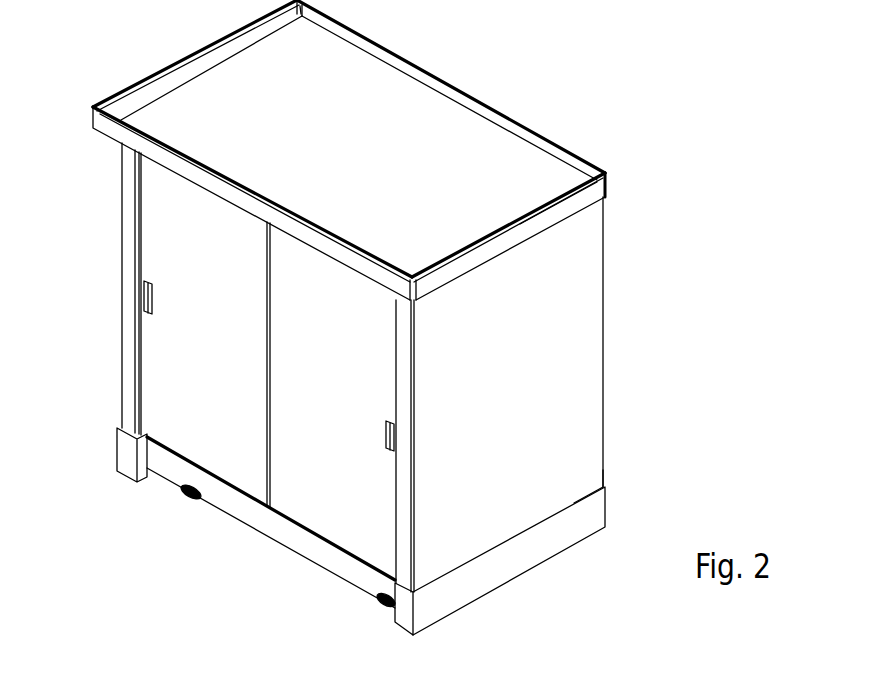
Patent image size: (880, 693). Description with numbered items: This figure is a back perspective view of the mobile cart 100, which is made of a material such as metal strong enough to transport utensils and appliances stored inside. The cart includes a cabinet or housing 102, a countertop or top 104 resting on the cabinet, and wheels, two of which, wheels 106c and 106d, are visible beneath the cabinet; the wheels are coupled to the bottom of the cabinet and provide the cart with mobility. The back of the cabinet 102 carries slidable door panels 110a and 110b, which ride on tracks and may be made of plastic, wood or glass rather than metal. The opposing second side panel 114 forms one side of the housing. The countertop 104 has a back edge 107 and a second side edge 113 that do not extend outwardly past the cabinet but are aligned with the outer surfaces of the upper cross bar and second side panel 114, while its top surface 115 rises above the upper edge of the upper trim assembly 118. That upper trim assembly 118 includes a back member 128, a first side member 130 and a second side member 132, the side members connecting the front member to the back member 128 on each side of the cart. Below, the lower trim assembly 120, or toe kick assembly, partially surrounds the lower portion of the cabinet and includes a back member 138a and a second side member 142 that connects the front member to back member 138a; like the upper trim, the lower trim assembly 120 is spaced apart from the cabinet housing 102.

The mobile cart 100 is at (362, 330).
The cabinet or housing 102 is at (362, 402).
The countertop or top 104 is at (380, 169).
The wheel 106c is at (380, 598).
The wheel 106d is at (192, 492).
The back edge 107 is at (263, 198).
The back panel or slidable door panel 110a is at (363, 472).
The back panel or slidable door panel 110b is at (173, 363).
The second side edge 113 is at (440, 267).
The second side panel 114 is at (570, 372).
The top surface 115 is at (423, 103).
The upper trim assembly 118 is at (575, 225).
The lower trim assembly or toe kick assembly 120 is at (580, 480).
The back member 128 is at (370, 272).
The first side member 130 is at (180, 60).
The second side member 132 is at (487, 251).
The back member 138a is at (127, 462).
The second side member 142 is at (524, 552).